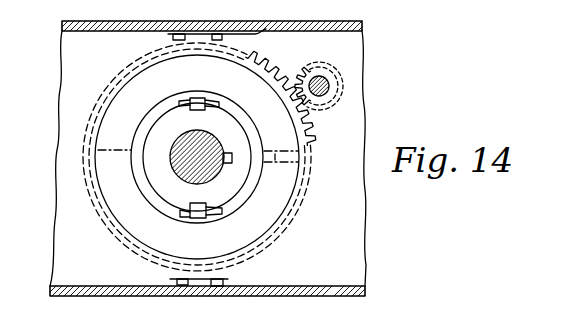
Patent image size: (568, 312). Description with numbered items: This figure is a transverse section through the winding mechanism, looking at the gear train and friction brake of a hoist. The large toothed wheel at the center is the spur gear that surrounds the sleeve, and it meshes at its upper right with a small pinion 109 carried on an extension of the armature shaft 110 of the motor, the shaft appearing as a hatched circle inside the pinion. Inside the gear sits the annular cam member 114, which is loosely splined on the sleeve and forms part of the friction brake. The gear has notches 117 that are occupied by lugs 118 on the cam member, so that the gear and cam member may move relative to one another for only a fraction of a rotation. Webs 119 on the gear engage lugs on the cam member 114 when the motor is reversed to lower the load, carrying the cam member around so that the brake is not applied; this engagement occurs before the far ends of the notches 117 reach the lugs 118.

The pinion 109 is at (340, 89).
The armature shaft 110 is at (327, 80).
The annular cam member 114 is at (227, 157).
The notches 117 is at (226, 82).
The lugs 118 is at (193, 110).
The webs 119 is at (121, 150).